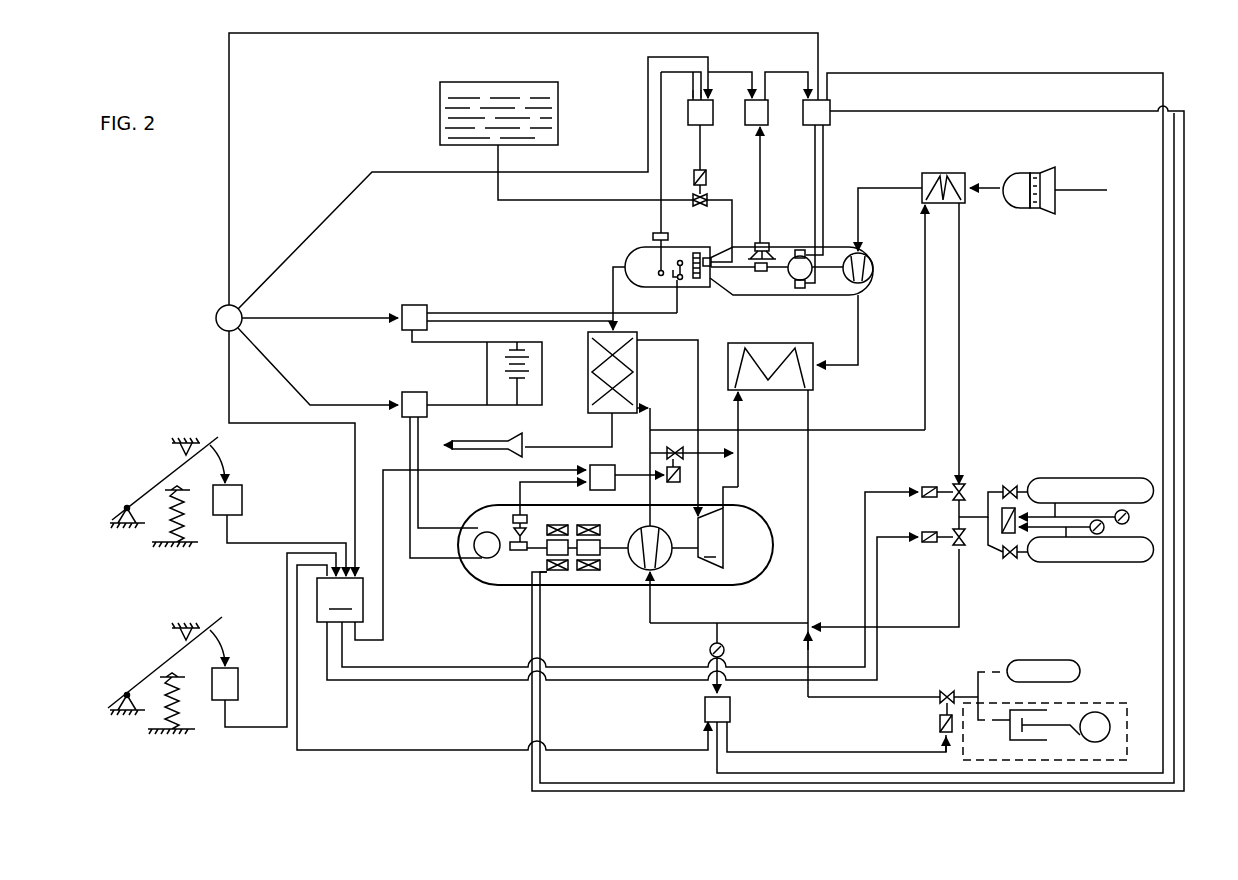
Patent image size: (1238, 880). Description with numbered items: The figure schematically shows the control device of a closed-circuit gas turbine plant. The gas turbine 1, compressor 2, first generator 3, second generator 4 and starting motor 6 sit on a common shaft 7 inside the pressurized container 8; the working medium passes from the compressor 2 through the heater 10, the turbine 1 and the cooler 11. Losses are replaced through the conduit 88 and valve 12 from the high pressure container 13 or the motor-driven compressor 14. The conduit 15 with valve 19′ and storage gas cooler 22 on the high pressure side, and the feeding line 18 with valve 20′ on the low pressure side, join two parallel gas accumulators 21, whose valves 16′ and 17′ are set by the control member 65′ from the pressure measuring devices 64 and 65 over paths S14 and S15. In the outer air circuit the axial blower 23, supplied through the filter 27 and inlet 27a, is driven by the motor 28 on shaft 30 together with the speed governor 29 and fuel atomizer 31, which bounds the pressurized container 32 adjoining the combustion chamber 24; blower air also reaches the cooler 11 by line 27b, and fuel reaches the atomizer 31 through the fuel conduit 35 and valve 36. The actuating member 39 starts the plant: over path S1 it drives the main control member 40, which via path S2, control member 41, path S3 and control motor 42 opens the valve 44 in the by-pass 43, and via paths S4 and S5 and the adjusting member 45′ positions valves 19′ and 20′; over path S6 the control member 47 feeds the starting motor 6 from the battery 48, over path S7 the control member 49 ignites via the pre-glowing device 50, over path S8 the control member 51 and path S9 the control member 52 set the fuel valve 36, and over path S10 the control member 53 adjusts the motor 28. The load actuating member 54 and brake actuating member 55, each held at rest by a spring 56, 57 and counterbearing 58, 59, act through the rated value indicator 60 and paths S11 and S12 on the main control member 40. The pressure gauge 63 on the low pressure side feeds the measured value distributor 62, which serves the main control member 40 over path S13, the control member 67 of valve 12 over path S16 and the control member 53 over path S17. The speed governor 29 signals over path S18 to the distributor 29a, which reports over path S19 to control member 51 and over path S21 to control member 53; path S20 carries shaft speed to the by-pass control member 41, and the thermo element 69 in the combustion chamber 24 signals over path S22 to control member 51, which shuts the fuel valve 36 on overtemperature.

The gas turbine 1 is at (710, 538).
The compressor 2 is at (668, 562).
The first generator 3 is at (582, 580).
The second generator 4 is at (548, 580).
The starting motor 6 is at (480, 545).
The common shaft 7 is at (694, 540).
The container 8 is at (750, 556).
The heater 10 is at (588, 370).
The cooler 11 is at (790, 343).
The valve 12 is at (952, 689).
The high pressure container 13 is at (1054, 662).
The compressor coupled to a motor 14 is at (1012, 740).
The conduit 15 is at (959, 410).
The valve 16′ is at (1018, 482).
The valve 17′ is at (1004, 558).
The conduit 18 is at (959, 594).
The valve 19′ is at (965, 492).
The valve 20′ is at (966, 537).
The gas accumulator 21 is at (1134, 482).
The storage gas cooler 22 is at (952, 173).
The axial blower 23 is at (872, 263).
The combustion chamber 24 is at (626, 285).
The filter 27 is at (1012, 208).
The combustion gas line 27a is at (984, 177).
The gas line 27b is at (861, 343).
The motor 28 is at (796, 286).
The speed governor 29 is at (760, 242).
The distributor 29a is at (756, 108).
The common shaft 30 is at (725, 289).
The fuel atomizer 31 is at (700, 253).
The container 32 is at (496, 441).
The fuel conduit 35 is at (588, 204).
The valve 36 is at (708, 196).
The actuating member 39 is at (216, 322).
The main control member 40 is at (340, 600).
The by-pass control member 41 is at (607, 472).
The control motor 42 is at (688, 483).
The by-pass 43 is at (714, 434).
The valve 44 is at (674, 446).
The adjusting member 45′ is at (927, 488).
The control member 47 is at (406, 396).
The battery 48 is at (508, 373).
The control member 49 is at (426, 316).
The pre-glowing device 50 is at (676, 258).
The fuel control member 51 is at (710, 116).
The adjusting member 52 is at (696, 170).
The control member 53 is at (824, 110).
The load actuating member 54 is at (238, 502).
The brake actuating member 55 is at (234, 678).
The spring 56 is at (186, 517).
The spring 57 is at (186, 702).
The counterbearing 58 is at (178, 458).
The counterbearing 59 is at (178, 626).
The rated value indicator 60 is at (150, 490).
The measured value distributor 62 is at (733, 716).
The pressure gauge 63 is at (510, 524).
The pressure measuring device 64 is at (1128, 518).
The pressure measuring device 65 is at (586, 442).
The control member 65′ is at (993, 548).
The control member 67 is at (940, 734).
The thermo element 69 is at (657, 252).
The conduit 88 is at (858, 692).
The control path S1 is at (320, 430).
The control path S2 is at (378, 582).
The control path S3 is at (610, 482).
The control path S4 is at (472, 662).
The control path S5 is at (458, 680).
The control path S6 is at (280, 372).
The control path S7 is at (336, 310).
The control path S8 is at (314, 225).
The control path S9 is at (702, 137).
The control path S10 is at (290, 34).
The control path S11 is at (276, 526).
The control path S12 is at (285, 584).
The path S13 is at (374, 760).
The path S14 is at (1055, 503).
The path S15 is at (1066, 537).
The path S16 is at (830, 753).
The path S17 is at (1112, 70).
The path S18 is at (781, 185).
The path S19 is at (756, 65).
The measuring path S20 is at (520, 483).
The path S21 is at (810, 65).
The path S22 is at (664, 168).